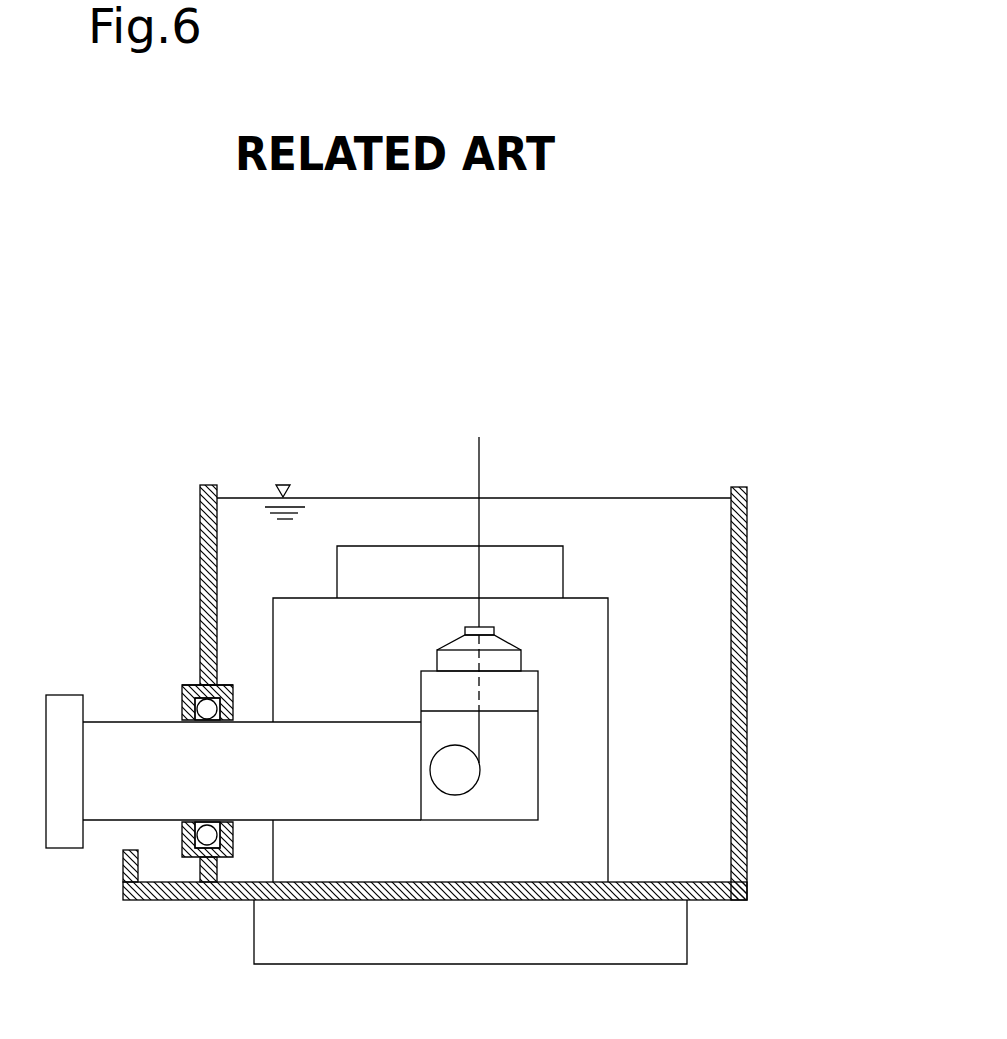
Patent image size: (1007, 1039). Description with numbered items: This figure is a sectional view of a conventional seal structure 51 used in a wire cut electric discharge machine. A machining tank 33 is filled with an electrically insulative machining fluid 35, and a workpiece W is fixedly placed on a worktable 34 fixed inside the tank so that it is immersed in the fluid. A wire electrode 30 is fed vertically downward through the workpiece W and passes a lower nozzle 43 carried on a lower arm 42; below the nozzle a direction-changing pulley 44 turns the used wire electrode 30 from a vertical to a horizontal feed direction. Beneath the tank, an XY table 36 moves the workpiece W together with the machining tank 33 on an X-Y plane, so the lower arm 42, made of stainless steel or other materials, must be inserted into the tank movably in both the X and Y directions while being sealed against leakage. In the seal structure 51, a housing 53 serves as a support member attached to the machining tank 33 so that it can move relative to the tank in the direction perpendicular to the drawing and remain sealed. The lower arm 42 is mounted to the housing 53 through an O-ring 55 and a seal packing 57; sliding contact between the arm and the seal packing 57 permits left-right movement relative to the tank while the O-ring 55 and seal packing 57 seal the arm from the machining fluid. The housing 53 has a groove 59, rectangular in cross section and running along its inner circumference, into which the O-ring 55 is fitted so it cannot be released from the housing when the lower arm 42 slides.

The wire electrode 30 is at (481, 462).
The machining tank 33 is at (747, 497).
The worktable 34 is at (588, 731).
The machining fluid 35 is at (230, 505).
The XY table 36 is at (663, 948).
The lower arm 42 is at (306, 722).
The lower nozzle 43 is at (445, 663).
The direction-changing pulley 44 is at (457, 783).
The seal structure 51 is at (146, 628).
The housing 53 is at (182, 694).
The O-ring 55 is at (218, 685).
The seal packing 57 is at (207, 722).
The groove 59 is at (186, 713).
The workpiece W is at (408, 565).